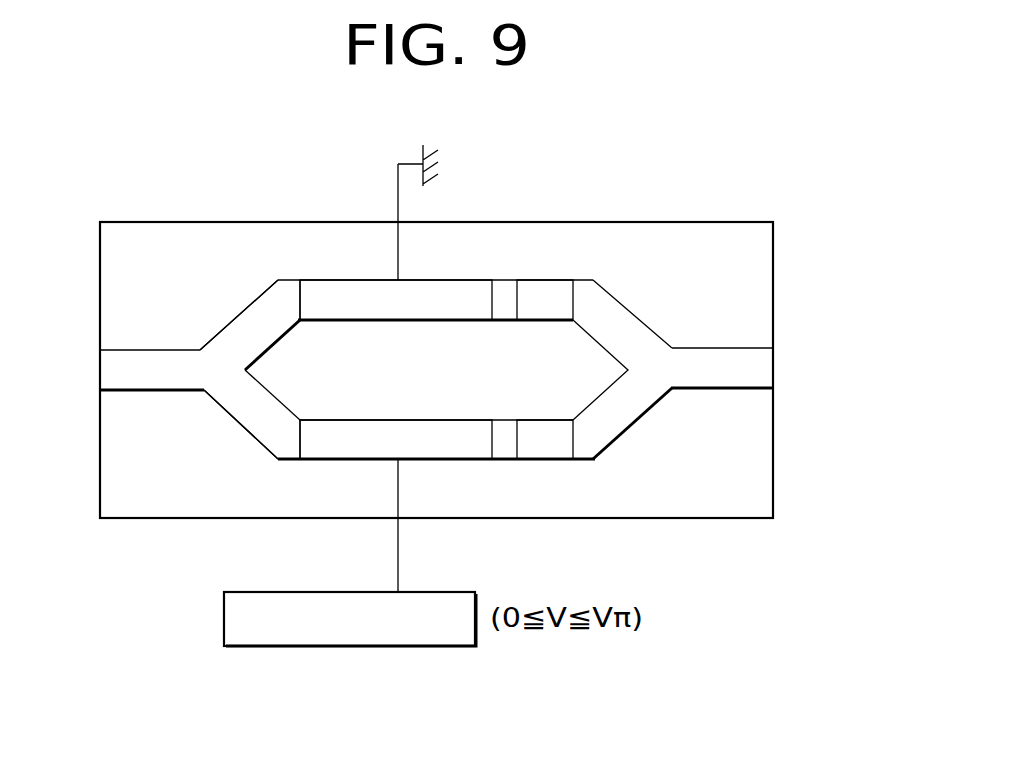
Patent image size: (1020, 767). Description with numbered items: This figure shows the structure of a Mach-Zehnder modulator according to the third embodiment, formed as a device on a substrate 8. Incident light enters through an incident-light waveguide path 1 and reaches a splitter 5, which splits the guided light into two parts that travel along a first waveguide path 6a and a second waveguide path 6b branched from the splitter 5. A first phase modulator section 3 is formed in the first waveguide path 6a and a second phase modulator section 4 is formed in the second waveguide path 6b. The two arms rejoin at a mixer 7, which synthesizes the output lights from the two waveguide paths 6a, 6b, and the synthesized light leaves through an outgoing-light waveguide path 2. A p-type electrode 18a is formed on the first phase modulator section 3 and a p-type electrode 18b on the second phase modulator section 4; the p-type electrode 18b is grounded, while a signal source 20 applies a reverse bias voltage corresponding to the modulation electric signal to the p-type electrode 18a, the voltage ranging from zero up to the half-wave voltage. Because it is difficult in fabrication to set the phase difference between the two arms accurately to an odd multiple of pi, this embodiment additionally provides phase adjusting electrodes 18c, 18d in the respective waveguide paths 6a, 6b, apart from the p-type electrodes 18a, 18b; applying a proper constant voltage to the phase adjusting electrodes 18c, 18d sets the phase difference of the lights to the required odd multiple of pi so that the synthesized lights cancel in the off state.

The incident-light waveguide path 1 is at (126, 383).
The outgoing-light waveguide path 2 is at (747, 382).
The first phase modulator section 3 is at (457, 460).
The second phase modulator section 4 is at (448, 278).
The splitter 5 is at (217, 370).
The first waveguide path 6a is at (280, 440).
The second waveguide path 6b is at (275, 305).
The mixer 7 is at (653, 370).
The substrate 8 is at (703, 233).
The p-type electrode 18a is at (373, 447).
The p-type electrode 18b is at (373, 292).
The phase adjusting electrode 18c is at (548, 447).
The phase adjusting electrode 18d is at (548, 292).
The signal source 20 is at (222, 612).